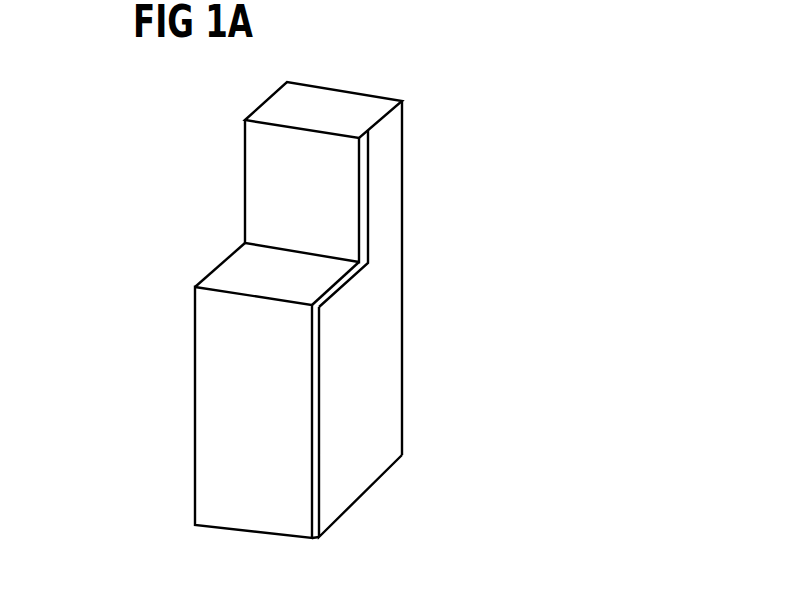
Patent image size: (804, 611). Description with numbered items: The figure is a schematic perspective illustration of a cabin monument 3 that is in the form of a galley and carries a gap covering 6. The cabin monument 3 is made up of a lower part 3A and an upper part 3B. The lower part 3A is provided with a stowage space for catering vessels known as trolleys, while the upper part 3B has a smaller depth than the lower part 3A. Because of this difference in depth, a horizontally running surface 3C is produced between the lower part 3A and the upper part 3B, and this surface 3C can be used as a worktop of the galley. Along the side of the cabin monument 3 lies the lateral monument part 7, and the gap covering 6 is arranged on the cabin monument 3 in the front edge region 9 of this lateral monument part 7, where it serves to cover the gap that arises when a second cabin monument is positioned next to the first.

The cabin monument 3 is at (432, 125).
The lower part 3A is at (203, 430).
The upper part 3B is at (255, 168).
The horizontally running surface 3C is at (233, 273).
The gap covering 6 is at (370, 205).
The lateral monument part 7 is at (368, 370).
The front edge region 9 is at (318, 477).